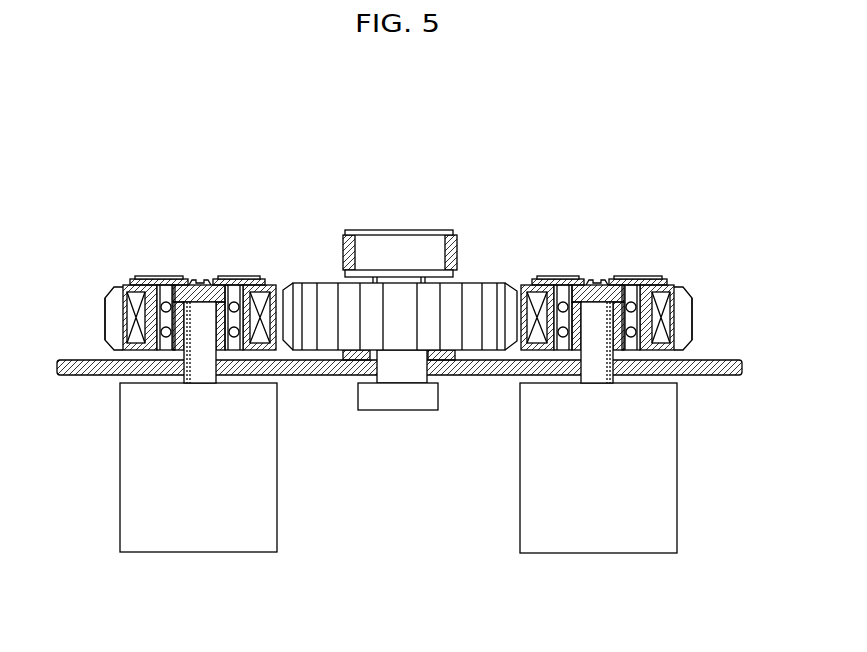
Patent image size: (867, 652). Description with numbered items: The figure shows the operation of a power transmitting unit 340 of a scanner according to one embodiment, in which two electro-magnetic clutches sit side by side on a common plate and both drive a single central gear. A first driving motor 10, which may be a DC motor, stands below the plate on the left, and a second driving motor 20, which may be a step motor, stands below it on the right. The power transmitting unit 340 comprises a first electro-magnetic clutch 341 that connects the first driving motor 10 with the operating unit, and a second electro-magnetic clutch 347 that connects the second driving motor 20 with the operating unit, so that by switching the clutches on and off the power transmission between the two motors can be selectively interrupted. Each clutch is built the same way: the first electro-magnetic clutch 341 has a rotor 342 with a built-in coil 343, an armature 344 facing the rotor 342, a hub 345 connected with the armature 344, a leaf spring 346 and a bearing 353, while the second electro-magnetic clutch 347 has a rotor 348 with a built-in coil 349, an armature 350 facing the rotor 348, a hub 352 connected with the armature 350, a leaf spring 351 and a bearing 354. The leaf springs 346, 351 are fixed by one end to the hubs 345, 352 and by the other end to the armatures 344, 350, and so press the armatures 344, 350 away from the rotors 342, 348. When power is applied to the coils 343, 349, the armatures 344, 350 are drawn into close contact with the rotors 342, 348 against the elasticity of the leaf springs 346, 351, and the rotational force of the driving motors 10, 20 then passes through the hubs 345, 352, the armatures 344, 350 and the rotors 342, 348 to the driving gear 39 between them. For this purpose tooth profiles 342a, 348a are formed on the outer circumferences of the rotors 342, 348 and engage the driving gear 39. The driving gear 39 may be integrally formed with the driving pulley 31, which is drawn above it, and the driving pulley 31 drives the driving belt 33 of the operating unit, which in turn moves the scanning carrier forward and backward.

The first driving motor 10 is at (127, 470).
The second driving motor 20 is at (528, 487).
The driving pulley 31 is at (430, 232).
The driving belt 33 is at (457, 247).
The driving gear 39 is at (473, 283).
The power transmitting unit 340 is at (395, 271).
The first electro-magnetic clutch 341 is at (150, 305).
The rotor 342 is at (150, 296).
The tooth profile 342a is at (110, 333).
The coil 343 is at (132, 317).
The armature 344 is at (138, 279).
The hub 345 is at (183, 278).
The leaf spring 346 is at (227, 279).
The second electro-magnetic clutch 347 is at (621, 311).
The rotor 348 is at (643, 318).
The tooth profile 348a is at (687, 310).
The coil 349 is at (678, 300).
The armature 350 is at (660, 279).
The leaf spring 351 is at (580, 279).
The hub 352 is at (627, 276).
The bearing 353 is at (160, 350).
The bearing 354 is at (565, 350).